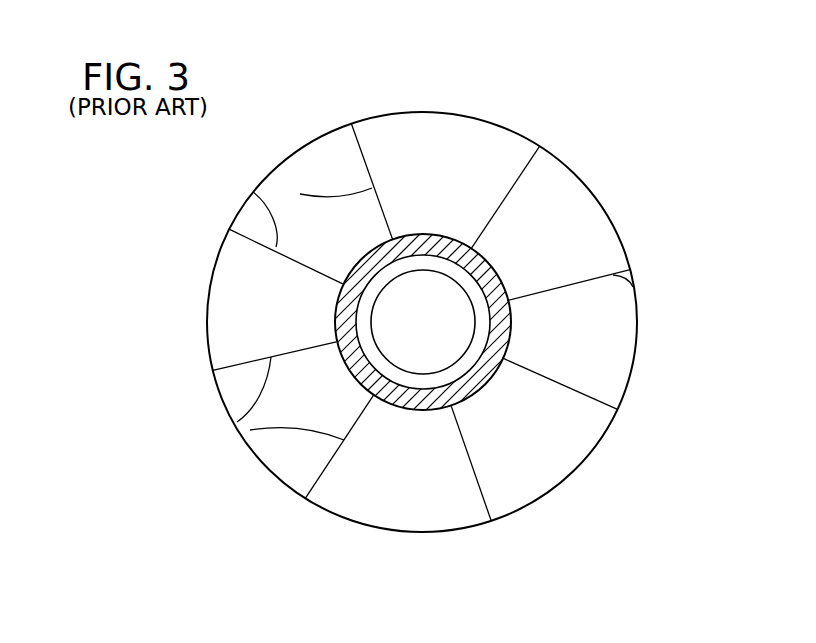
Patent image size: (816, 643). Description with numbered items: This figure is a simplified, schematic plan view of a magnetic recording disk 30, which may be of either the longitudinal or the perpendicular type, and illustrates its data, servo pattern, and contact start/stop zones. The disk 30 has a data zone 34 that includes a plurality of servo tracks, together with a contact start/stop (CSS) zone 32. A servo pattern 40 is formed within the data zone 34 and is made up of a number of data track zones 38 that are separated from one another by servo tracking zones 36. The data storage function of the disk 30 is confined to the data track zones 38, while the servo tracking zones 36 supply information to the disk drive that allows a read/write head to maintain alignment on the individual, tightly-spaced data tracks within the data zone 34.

The magnetic recording disk 30 is at (618, 148).
The contact start/stop (CSS) zone 32 is at (503, 334).
The data zone 34 is at (552, 430).
The servo tracking zones 36 is at (300, 194).
The data track zones 38 is at (350, 162).
The servo pattern 40 is at (277, 312).